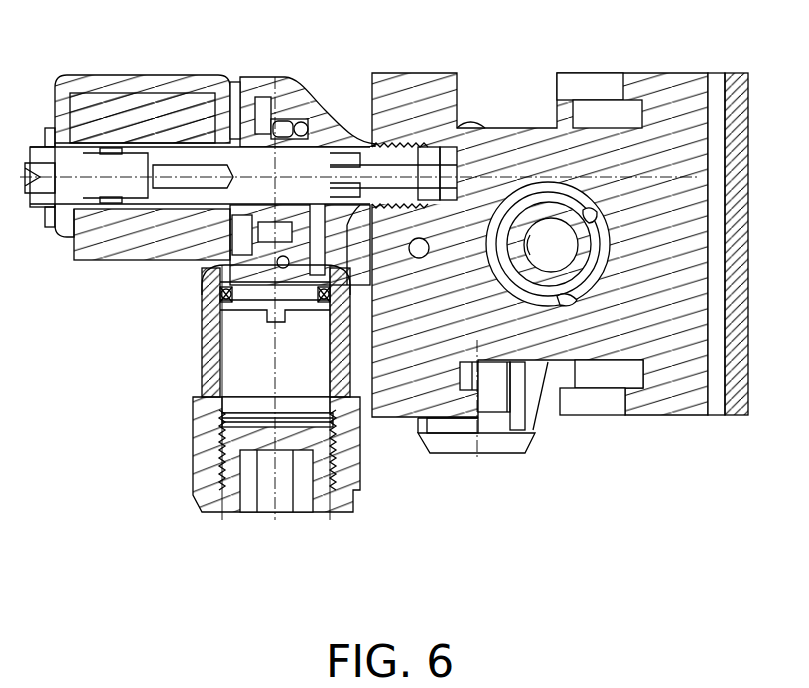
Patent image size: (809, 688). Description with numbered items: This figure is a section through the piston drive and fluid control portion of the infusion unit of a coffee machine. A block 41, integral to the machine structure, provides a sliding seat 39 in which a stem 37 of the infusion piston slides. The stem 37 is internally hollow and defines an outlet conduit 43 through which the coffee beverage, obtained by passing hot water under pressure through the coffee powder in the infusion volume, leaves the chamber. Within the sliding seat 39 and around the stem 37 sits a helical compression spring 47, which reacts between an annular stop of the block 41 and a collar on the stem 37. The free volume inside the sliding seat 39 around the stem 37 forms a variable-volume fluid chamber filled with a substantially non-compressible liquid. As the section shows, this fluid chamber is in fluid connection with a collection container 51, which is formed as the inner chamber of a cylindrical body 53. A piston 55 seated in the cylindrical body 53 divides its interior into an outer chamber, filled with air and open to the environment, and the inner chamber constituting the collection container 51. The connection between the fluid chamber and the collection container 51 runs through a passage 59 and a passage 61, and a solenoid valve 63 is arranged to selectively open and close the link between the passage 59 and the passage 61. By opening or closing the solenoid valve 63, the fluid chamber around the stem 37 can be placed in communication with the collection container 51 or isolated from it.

The stem 37 is at (517, 288).
The sliding seat 39 is at (608, 207).
The block 41 is at (674, 80).
The outlet conduit 43 is at (575, 245).
The helical compression spring 47 is at (540, 195).
The collection container 51 is at (262, 290).
The cylindrical body 53 is at (228, 383).
The piston 55 is at (245, 300).
The passage 59 is at (322, 267).
The passage 61 is at (403, 173).
The solenoid valve 63 is at (133, 76).